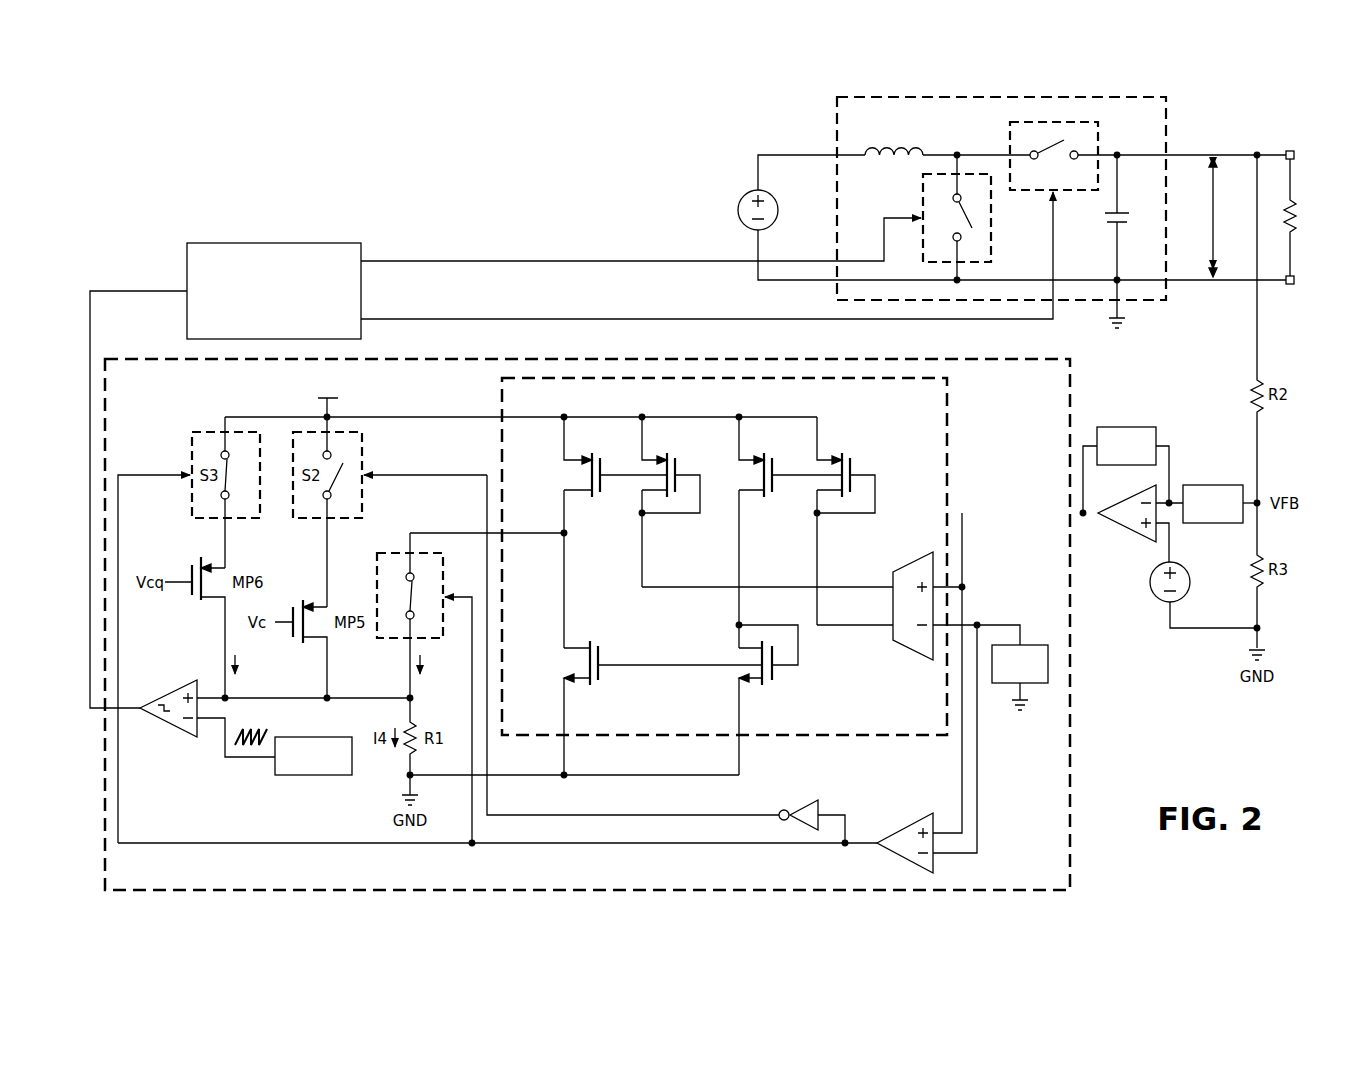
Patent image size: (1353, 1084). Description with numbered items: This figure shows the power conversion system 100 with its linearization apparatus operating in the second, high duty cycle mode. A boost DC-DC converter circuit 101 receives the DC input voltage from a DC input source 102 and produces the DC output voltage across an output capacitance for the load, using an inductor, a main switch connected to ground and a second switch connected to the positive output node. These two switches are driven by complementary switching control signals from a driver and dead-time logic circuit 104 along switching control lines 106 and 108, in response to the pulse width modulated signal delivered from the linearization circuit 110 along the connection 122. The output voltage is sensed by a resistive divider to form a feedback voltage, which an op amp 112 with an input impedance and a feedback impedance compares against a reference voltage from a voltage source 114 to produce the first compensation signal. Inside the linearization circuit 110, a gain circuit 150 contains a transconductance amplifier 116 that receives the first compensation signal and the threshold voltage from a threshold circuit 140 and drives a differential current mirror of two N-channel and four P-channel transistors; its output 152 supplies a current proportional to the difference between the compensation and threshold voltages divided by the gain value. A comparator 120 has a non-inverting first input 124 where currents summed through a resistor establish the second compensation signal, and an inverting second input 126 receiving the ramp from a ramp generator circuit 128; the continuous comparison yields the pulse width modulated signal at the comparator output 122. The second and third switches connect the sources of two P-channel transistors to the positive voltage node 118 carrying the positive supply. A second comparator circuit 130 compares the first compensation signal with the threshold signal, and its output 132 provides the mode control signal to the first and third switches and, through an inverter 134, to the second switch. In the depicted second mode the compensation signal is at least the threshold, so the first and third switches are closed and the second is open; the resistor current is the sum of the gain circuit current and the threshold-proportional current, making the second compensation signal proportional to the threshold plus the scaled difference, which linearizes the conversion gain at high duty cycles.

The power conversion system 100 is at (418, 142).
The boost DC-DC converter circuit 101 is at (1171, 128).
The DC input source 102 is at (738, 206).
The driver and dead-time logic circuit 104 is at (272, 243).
The switching control line 106 is at (520, 261).
The switching control line 108 is at (575, 319).
The linearization circuit 110 is at (165, 434).
The op amp 112 is at (1126, 531).
The voltage source 114 is at (1150, 585).
The transconductance amplifier 116 is at (921, 655).
The positive voltage node 118 is at (457, 417).
The comparator 120 is at (165, 723).
The comparator output 122 is at (138, 297).
The first comparator input 124 is at (302, 698).
The second comparator input 126 is at (252, 757).
The ramp generator circuit 128 is at (316, 775).
The second comparator circuit 130 is at (906, 826).
The comparator output 132 is at (190, 843).
The inverter 134 is at (798, 804).
The threshold circuit 140 is at (1032, 645).
The gain circuit 150 is at (888, 447).
The gain circuit output 152 is at (457, 533).